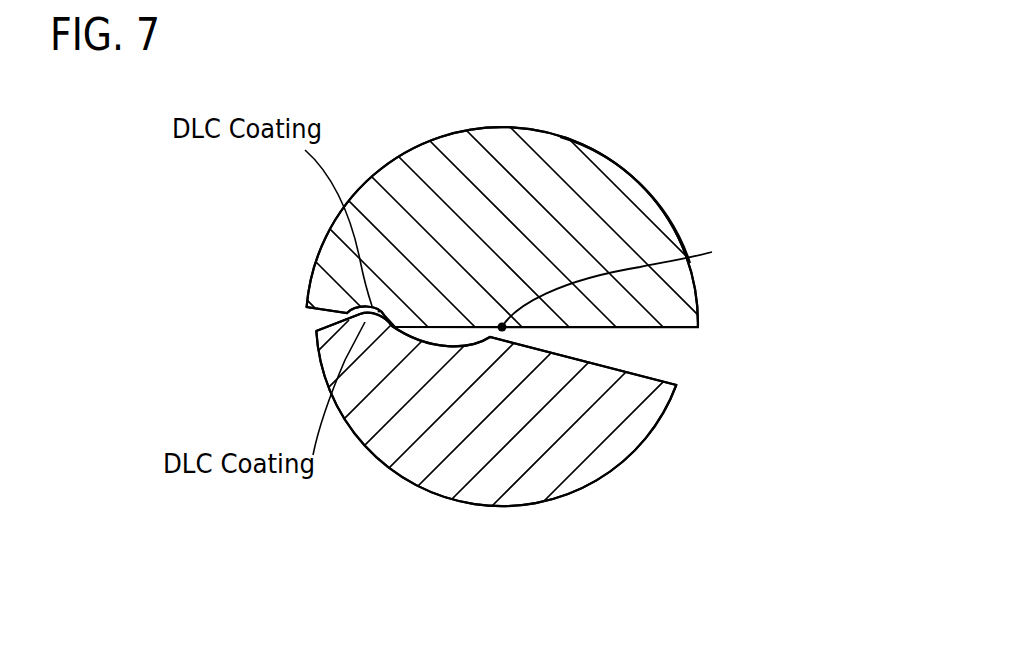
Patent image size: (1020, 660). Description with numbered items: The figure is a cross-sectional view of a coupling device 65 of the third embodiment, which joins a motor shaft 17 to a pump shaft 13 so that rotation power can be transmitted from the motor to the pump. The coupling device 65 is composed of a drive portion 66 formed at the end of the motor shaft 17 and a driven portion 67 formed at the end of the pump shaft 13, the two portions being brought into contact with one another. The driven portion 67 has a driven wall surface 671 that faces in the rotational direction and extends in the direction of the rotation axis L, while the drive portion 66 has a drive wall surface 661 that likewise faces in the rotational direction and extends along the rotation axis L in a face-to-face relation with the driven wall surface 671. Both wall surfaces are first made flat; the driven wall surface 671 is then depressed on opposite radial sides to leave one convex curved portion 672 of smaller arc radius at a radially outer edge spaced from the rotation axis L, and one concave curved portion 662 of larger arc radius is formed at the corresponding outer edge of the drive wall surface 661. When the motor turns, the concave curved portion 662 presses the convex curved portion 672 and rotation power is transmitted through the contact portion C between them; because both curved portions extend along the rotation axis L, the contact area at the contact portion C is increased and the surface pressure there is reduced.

The pump shaft 13 is at (587, 492).
The motor shaft 17 is at (609, 156).
The coupling device 65 is at (407, 132).
The drive portion 66 is at (527, 170).
The driven portion 67 is at (455, 455).
The drive wall surface 661 is at (672, 327).
The concave curved portion 662 is at (336, 303).
The driven wall surface 671 is at (672, 385).
The convex curved portion 672 is at (392, 327).
The rotation axis L is at (617, 279).
The contact portion C is at (380, 310).